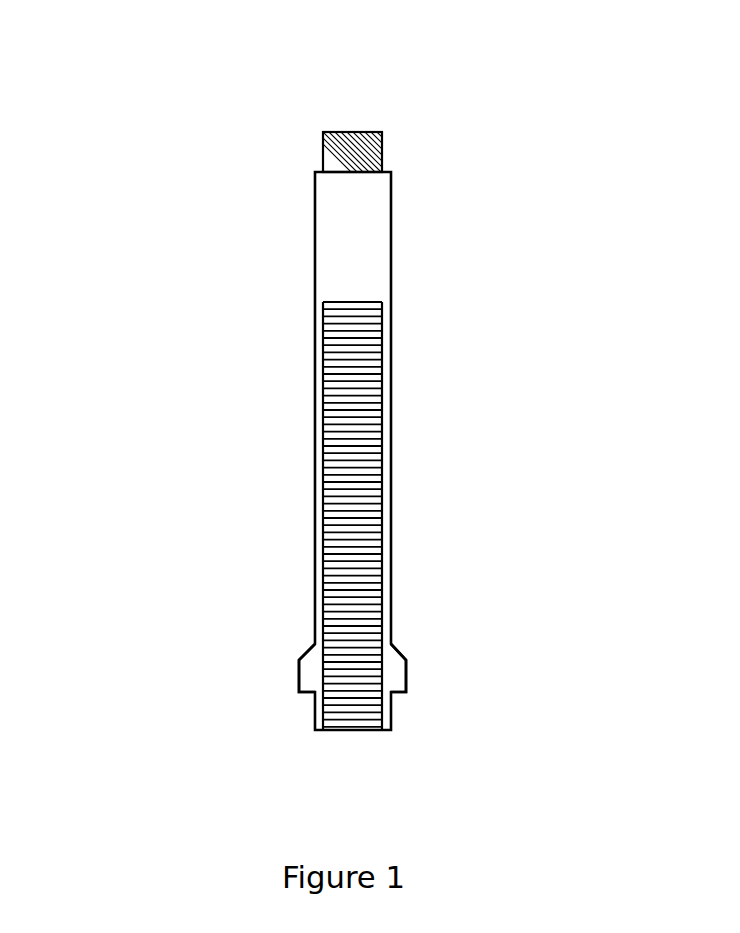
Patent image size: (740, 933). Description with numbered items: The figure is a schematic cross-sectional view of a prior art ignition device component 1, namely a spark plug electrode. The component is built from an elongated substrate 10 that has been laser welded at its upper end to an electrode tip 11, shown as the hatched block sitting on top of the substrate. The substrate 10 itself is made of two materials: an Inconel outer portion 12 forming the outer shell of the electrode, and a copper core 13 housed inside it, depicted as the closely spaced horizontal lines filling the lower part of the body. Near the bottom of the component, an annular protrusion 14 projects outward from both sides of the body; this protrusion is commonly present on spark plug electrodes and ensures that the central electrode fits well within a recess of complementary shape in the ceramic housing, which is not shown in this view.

The ignition device component 1 is at (347, 365).
The substrate 10 is at (317, 363).
The electrode tip 11 is at (346, 158).
The Inconel outer portion 12 is at (358, 230).
The copper core 13 is at (353, 523).
The annular protrusion 14 is at (402, 672).